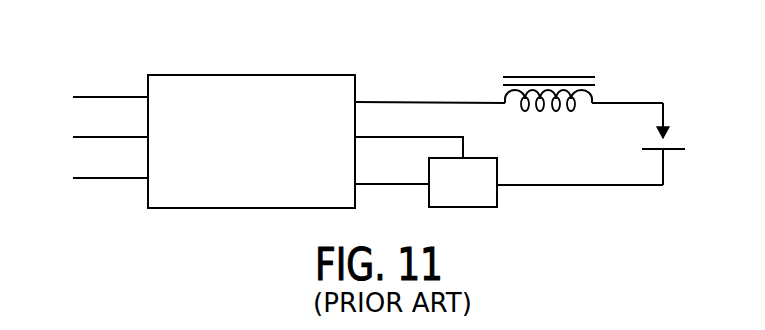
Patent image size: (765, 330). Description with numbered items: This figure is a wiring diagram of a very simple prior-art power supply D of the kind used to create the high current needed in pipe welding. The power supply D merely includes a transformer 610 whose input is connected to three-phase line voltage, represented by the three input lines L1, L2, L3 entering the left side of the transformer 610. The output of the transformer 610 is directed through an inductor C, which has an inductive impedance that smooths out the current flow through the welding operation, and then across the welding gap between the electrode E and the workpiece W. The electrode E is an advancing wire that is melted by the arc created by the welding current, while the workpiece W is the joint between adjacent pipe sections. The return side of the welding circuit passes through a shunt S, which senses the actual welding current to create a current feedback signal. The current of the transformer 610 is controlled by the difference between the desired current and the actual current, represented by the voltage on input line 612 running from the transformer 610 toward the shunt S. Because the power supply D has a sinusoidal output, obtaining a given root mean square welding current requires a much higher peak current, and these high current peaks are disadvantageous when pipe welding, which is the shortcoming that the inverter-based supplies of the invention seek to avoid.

The transformer 610 is at (260, 75).
The input line 612 is at (404, 136).
The power supply D is at (358, 59).
The shunt S is at (480, 158).
The inductor C is at (553, 75).
The electrode E is at (667, 122).
The workpiece W is at (673, 150).
The line voltage input L1 is at (94, 98).
The line voltage input L2 is at (94, 138).
The line voltage input L3 is at (94, 179).